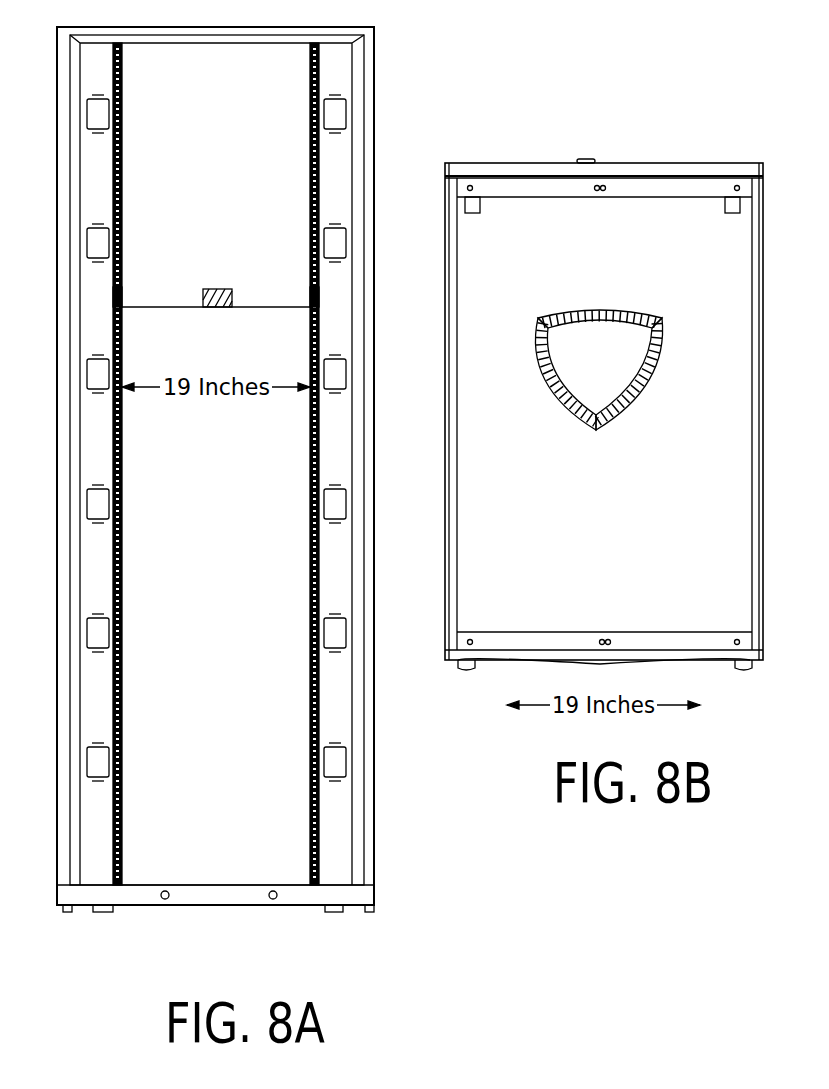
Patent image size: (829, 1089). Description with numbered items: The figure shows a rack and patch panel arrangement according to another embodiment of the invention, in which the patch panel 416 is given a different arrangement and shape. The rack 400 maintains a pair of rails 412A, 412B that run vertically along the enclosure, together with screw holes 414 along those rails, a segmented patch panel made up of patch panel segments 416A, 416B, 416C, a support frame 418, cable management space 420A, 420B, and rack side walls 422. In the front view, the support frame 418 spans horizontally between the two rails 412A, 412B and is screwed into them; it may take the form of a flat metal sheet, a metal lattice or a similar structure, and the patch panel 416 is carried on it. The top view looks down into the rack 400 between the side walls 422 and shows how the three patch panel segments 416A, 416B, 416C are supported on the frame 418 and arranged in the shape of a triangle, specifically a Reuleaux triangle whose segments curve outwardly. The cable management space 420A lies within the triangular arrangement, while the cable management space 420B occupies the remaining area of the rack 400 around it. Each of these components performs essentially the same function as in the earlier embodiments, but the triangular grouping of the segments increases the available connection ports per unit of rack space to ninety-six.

In FIG. 8A, the rack 400 is at (370, 67).
In FIG. 8A, the rail 412A is at (122, 192).
In FIG. 8A, the rail 412B is at (310, 136).
In FIG. 8A, the screw holes 414 is at (122, 450).
In FIG. 8A, the patch panel 416 is at (212, 289).
In FIG. 8A, the support frame 418 is at (258, 310).
In FIG. 8B, the rack side walls 422 is at (452, 270).
In FIG. 8B, the patch panel segment 416A is at (640, 390).
In FIG. 8B, the patch panel segment 416B is at (592, 313).
In FIG. 8B, the patch panel segment 416C is at (558, 388).
In FIG. 8B, the cable management space 420A is at (599, 367).
In FIG. 8B, the cable management space 420B is at (604, 585).